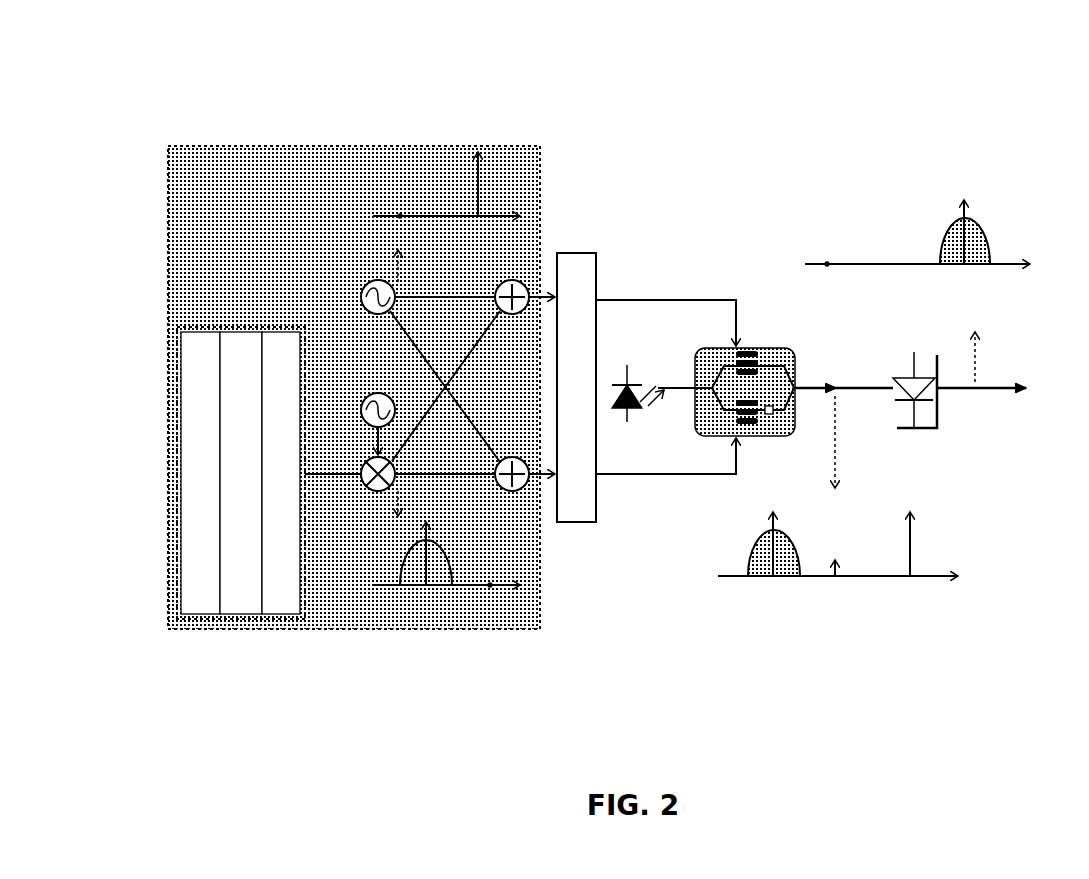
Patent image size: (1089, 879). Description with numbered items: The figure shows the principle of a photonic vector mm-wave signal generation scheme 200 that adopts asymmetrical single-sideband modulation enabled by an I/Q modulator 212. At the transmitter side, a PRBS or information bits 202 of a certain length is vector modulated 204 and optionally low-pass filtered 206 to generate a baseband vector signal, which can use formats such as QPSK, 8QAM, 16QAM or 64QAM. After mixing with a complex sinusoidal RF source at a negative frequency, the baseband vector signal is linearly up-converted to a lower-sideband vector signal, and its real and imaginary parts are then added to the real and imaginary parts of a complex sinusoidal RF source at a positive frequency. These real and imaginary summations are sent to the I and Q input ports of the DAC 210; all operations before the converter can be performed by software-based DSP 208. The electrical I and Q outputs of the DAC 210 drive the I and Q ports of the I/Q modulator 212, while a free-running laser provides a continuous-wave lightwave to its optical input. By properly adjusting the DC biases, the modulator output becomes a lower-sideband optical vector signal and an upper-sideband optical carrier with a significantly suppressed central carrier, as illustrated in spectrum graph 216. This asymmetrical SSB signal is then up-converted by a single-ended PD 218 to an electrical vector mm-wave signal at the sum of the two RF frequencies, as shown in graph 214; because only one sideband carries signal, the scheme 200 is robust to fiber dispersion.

The photonic vector mm-wave signal generation scheme 200 is at (772, 64).
The PRBS or information bits 202 is at (180, 350).
The vector modulation 204 is at (240, 350).
The low-pass filtering 206 is at (291, 327).
The software-based DSP 208 is at (378, 146).
The DAC 210 is at (581, 525).
The I/Q modulator 212 is at (767, 298).
The graph of electrical vector mm-wave signal spectrum 214 is at (942, 212).
The spectrum graph of asymmetrical SSB optical signal 216 is at (783, 618).
The single-ended PD 218 is at (952, 447).